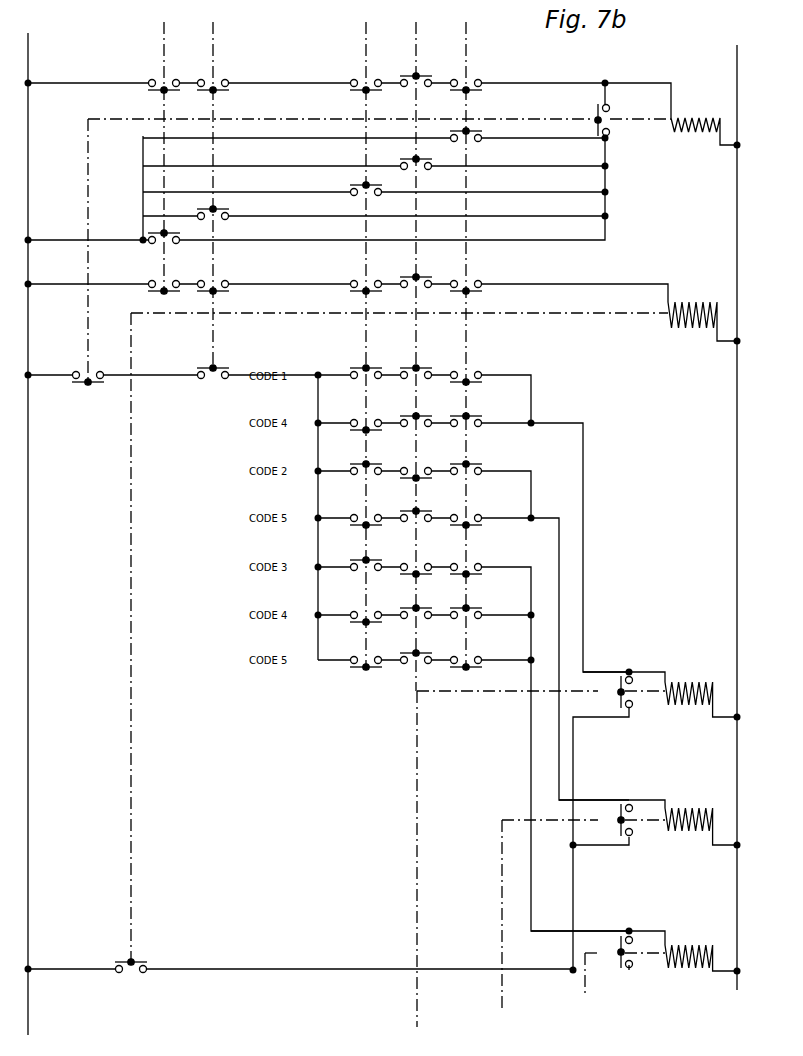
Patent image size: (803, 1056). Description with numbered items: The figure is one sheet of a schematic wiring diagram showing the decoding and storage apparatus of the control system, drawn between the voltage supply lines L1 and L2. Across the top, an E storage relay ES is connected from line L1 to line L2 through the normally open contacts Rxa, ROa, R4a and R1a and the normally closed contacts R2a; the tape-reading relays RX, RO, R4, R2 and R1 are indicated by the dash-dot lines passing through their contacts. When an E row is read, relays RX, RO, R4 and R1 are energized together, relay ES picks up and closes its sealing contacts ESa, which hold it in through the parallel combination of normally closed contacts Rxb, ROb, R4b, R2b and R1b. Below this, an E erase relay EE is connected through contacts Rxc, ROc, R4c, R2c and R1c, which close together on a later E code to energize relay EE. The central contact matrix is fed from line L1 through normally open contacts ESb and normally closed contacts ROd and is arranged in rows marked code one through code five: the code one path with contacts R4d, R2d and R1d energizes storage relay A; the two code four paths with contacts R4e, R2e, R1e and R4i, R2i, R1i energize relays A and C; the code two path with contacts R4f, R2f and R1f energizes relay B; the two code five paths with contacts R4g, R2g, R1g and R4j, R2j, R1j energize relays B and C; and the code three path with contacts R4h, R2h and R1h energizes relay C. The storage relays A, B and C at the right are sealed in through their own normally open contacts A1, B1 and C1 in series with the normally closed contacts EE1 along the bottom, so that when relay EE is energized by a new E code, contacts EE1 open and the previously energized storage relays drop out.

The voltage supply line L1 is at (30, 519).
The voltage supply line L2 is at (734, 514).
The relay RX is at (164, 146).
The relay R0 RO is at (212, 185).
The relay R4 is at (363, 335).
The relay R2 is at (412, 346).
The relay R1 is at (464, 336).
The storage relay A is at (686, 682).
The storage relay B is at (684, 812).
The storage relay C is at (680, 950).
The E storage relay ES is at (700, 112).
The E erase relay EE is at (695, 331).
The normally open contacts RXa Rxa is at (160, 78).
The normally open contacts R0a ROa is at (224, 79).
The normally open contacts R4a is at (360, 89).
The normally closed contacts R2a is at (418, 77).
The normally open contacts R1a is at (476, 80).
The sealing contacts ESa is at (614, 127).
The normally closed contacts R1b is at (476, 144).
The normally closed contacts R2b is at (424, 171).
The normally closed contacts R4b is at (360, 187).
The normally closed contacts R0b ROb is at (228, 212).
The normally closed contacts RXb Rxb is at (150, 236).
The contacts RXc Rxc is at (152, 291).
The contacts R0c ROc is at (220, 291).
The contacts R4c is at (358, 279).
The contacts R2c is at (418, 277).
The contacts R1c is at (474, 281).
The normally open contacts ESb is at (86, 381).
The normally closed contacts R0d ROd is at (210, 379).
The contacts R4d is at (356, 368).
The contacts R2d is at (416, 368).
The normally open contacts R1d is at (478, 386).
The contacts R4e is at (358, 417).
The contacts R2e is at (416, 417).
The contacts R1e is at (478, 429).
The contacts R4f is at (358, 466).
The contacts R2f is at (420, 470).
The contacts R1f is at (478, 475).
The contacts R4g is at (358, 514).
The contacts R2g is at (416, 512).
The contacts R1g is at (478, 526).
The contacts R4h is at (358, 562).
The contacts R2h is at (418, 566).
The contacts R1h is at (478, 573).
The contacts R4i is at (358, 610).
The contacts R2i is at (416, 608).
The contacts R1i is at (478, 617).
The contacts R4j is at (356, 669).
The contacts R2j is at (416, 656).
The contacts R1j is at (478, 670).
The normally open contacts A1 is at (634, 705).
The normally open contacts B1 is at (636, 838).
The normally open contacts C1 is at (638, 971).
The normally closed contacts EE1 is at (137, 977).